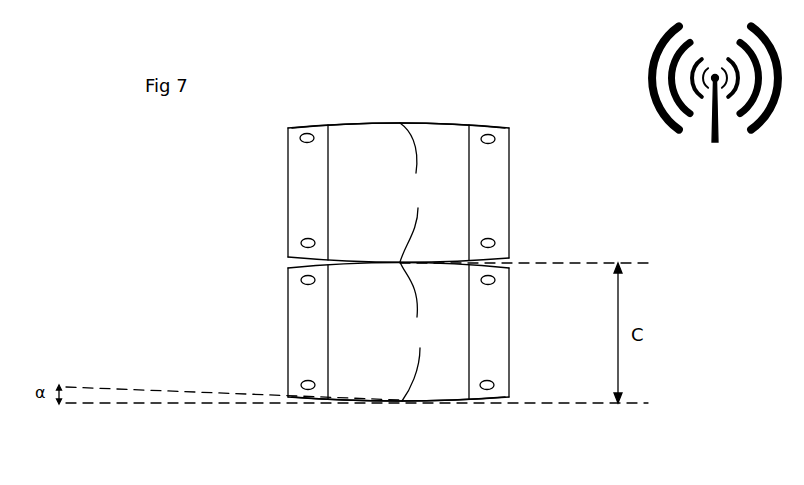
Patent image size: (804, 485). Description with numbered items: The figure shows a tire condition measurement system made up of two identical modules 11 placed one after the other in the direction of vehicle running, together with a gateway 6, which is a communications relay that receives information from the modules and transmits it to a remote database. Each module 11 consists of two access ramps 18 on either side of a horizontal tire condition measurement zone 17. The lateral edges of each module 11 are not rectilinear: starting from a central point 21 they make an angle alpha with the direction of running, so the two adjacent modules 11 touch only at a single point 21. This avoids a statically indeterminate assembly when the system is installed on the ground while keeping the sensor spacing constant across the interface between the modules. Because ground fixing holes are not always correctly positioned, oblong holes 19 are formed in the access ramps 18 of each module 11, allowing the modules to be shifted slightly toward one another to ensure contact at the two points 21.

The gateway 6 is at (712, 132).
The module 11 is at (427, 123).
The horizontal tire condition measurement zone 17 is at (353, 143).
The access ramp 18 is at (303, 167).
The oblong hole 19 is at (300, 137).
The central point 21 is at (414, 262).